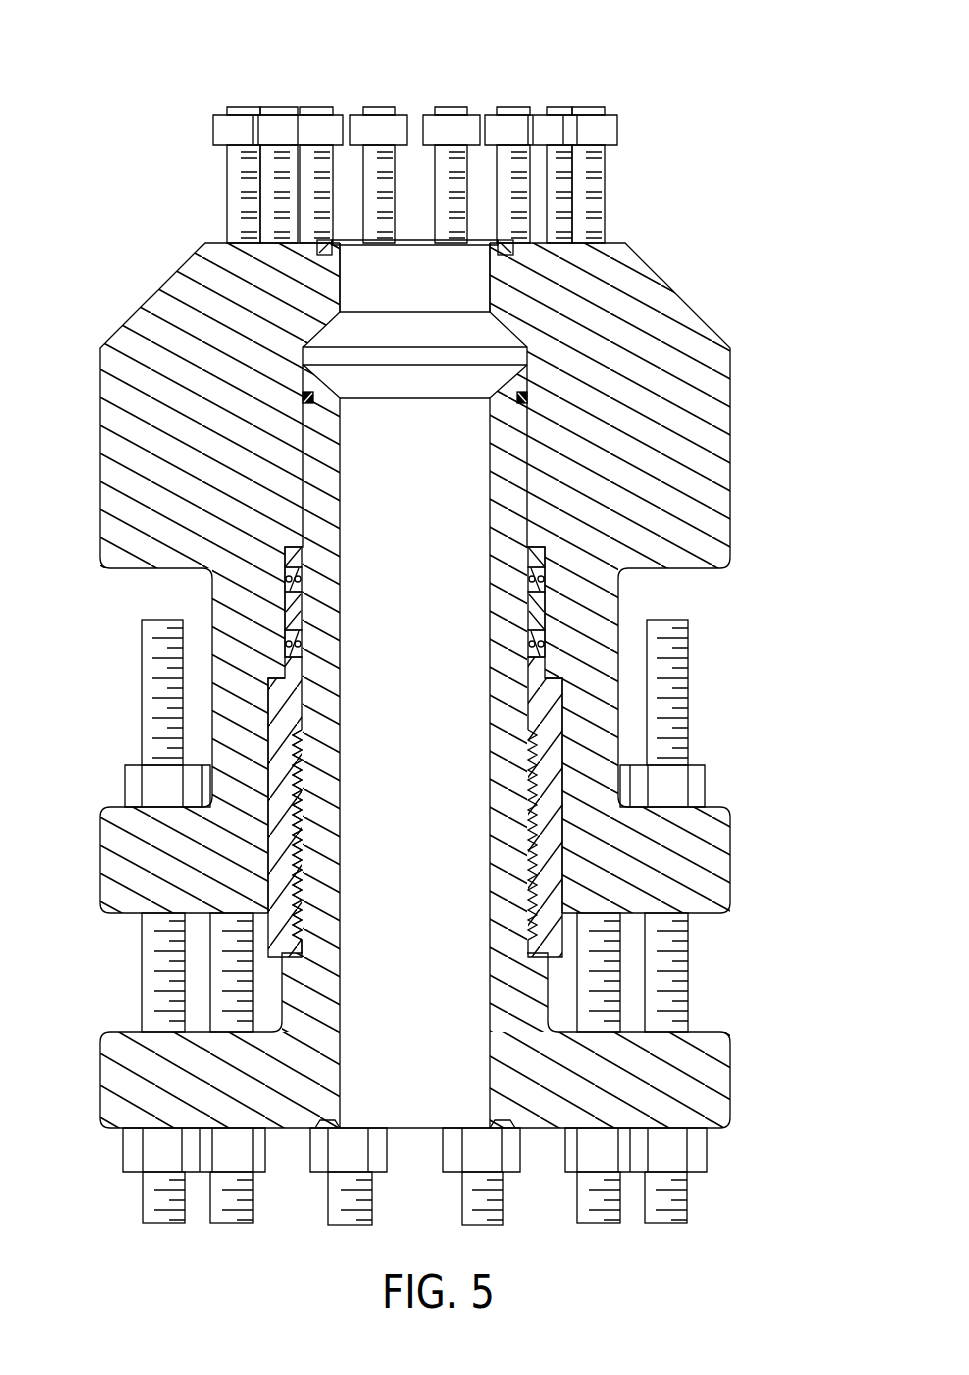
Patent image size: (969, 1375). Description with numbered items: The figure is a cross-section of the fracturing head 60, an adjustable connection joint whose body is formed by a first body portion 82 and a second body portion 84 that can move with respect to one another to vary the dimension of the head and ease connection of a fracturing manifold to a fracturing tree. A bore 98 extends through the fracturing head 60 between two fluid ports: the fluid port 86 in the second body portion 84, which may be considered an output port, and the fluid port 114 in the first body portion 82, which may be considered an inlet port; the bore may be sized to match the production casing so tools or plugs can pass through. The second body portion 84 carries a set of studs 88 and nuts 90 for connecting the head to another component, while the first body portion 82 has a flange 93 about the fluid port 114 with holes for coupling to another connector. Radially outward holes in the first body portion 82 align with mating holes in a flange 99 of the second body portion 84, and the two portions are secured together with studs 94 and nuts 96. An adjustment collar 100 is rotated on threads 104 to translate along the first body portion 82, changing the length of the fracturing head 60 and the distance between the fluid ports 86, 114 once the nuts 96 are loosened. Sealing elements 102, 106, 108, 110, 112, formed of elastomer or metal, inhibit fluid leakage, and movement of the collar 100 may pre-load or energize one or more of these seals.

The fracturing head 60 is at (64, 74).
The first body portion 82 is at (110, 1078).
The second body portion 84 is at (160, 305).
The fluid port 86 is at (422, 262).
The studs 88 is at (233, 193).
The nuts 90 is at (313, 128).
The flange 93 is at (712, 1076).
The studs 94 is at (150, 690).
The nuts 96 is at (135, 786).
The bore 98 is at (340, 1073).
The flange 99 is at (712, 846).
The adjustment collar 100 is at (287, 830).
The sealing element 102 is at (300, 717).
The threads 104 is at (298, 890).
The sealing element 106 is at (300, 608).
The sealing element 108 is at (303, 549).
The seals 110 is at (316, 578).
The sealing element 112 is at (318, 403).
The fluid port 114 is at (403, 1147).